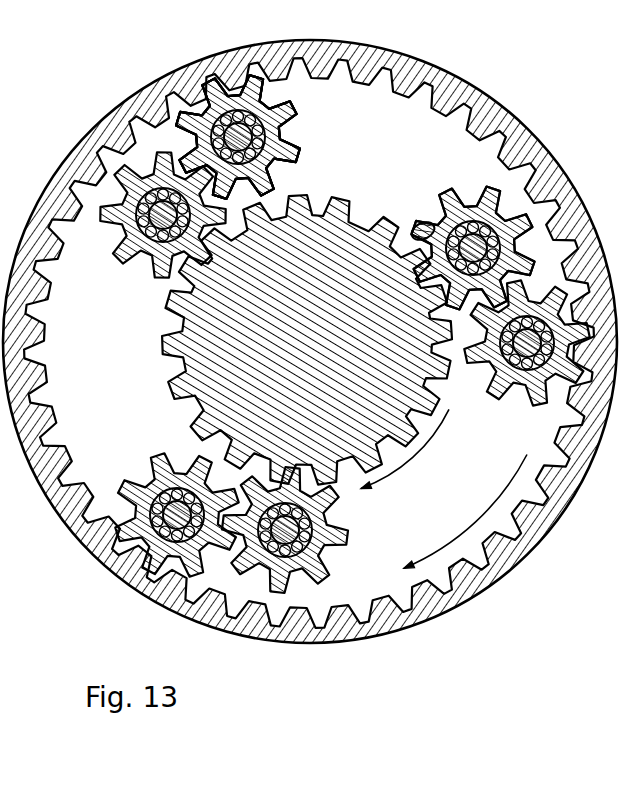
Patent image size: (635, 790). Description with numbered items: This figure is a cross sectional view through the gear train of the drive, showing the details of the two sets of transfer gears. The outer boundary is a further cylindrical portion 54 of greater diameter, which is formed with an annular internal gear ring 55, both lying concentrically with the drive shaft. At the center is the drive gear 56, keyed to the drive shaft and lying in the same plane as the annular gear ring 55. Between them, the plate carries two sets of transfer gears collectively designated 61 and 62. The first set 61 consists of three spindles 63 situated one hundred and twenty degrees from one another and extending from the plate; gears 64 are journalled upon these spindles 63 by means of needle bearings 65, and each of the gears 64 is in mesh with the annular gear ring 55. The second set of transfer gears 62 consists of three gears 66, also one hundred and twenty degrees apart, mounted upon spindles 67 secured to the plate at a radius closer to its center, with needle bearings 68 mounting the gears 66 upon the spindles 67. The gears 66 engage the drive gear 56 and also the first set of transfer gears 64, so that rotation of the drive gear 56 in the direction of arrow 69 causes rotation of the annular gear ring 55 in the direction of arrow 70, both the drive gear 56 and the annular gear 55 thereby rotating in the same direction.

The further cylindrical portion 54 is at (208, 57).
The annular internal gear ring 55 is at (408, 75).
The drive gear 56 is at (168, 350).
The first set of transfer gears 61 is at (292, 128).
The second set of transfer gears 62 is at (150, 259).
The spindles 63 is at (288, 144).
The gears 64 is at (298, 176).
The needle bearings 65 is at (298, 108).
The gears 66 is at (487, 182).
The spindles 67 is at (440, 220).
The needle bearings 68 is at (522, 173).
The arrow 69 is at (418, 457).
The arrow 70 is at (465, 528).